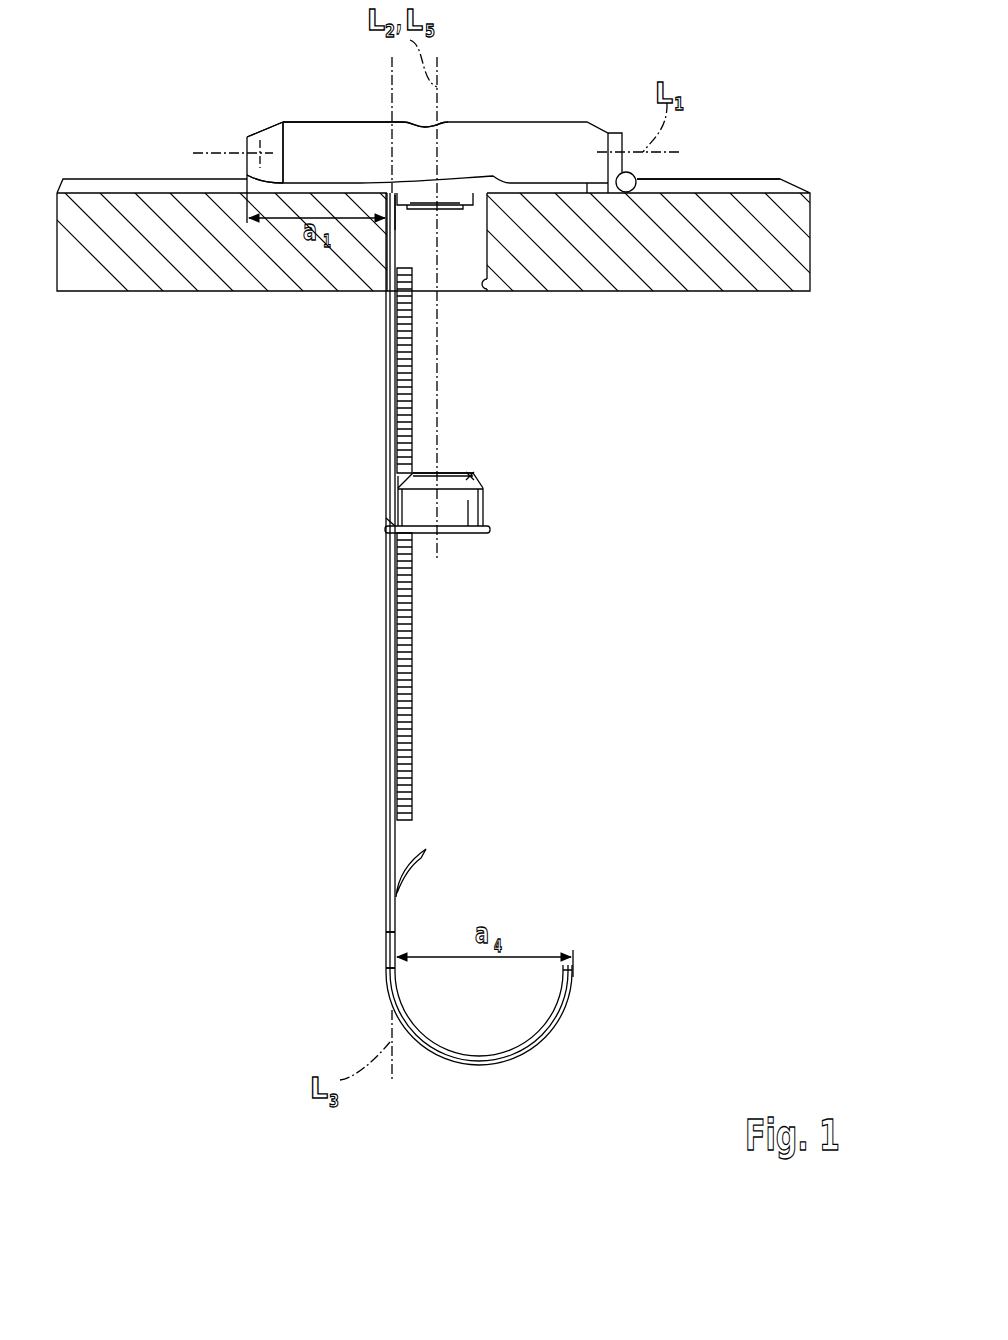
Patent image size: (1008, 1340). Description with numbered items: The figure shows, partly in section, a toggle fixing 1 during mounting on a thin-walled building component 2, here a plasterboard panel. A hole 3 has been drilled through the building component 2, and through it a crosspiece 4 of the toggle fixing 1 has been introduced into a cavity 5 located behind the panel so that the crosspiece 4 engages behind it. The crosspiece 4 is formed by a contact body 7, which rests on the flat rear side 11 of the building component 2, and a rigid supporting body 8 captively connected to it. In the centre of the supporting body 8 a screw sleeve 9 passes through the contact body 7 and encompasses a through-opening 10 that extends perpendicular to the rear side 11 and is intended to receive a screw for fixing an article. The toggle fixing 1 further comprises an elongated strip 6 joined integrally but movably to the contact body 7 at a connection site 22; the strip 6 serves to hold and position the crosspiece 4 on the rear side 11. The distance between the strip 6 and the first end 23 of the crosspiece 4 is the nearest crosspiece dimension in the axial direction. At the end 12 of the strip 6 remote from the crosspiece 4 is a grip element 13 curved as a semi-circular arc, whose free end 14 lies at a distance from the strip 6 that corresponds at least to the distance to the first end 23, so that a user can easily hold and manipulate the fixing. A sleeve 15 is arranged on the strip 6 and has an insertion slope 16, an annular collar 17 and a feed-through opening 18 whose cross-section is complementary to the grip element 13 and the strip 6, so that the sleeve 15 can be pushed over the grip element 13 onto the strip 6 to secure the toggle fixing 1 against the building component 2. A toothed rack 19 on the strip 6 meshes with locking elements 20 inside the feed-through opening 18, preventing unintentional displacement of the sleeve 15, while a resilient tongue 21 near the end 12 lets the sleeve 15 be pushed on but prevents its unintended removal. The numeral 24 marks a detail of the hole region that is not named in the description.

The toggle fixing 1 is at (497, 110).
The building component 2 is at (793, 232).
The hole 3 is at (458, 272).
The crosspiece 4 is at (316, 143).
The cavity 5 is at (728, 75).
The strip 6 is at (388, 773).
The contact body 7 is at (263, 185).
The supporting body 8 is at (350, 140).
The screw sleeve 9 is at (443, 196).
The opening 10 is at (445, 119).
The rear side 11 is at (745, 181).
The end of the strip 12 is at (386, 957).
The grip element 13 is at (455, 1055).
The free end 14 is at (578, 975).
The sleeve 15 is at (477, 509).
The insertion slope 16 is at (470, 476).
The collar 17 is at (448, 533).
The feed-through opening 18 is at (392, 520).
The toothed rack 19 is at (412, 678).
The locking elements 20 is at (398, 476).
The resilient tongue 21 is at (417, 862).
The connection site 22 is at (393, 222).
The first end of the crosspiece 23 is at (243, 143).
The notch 24 is at (483, 285).